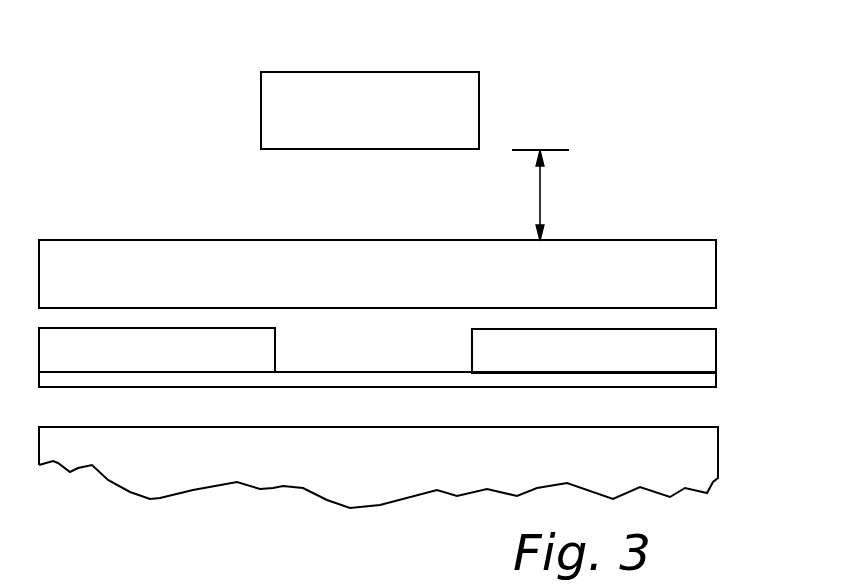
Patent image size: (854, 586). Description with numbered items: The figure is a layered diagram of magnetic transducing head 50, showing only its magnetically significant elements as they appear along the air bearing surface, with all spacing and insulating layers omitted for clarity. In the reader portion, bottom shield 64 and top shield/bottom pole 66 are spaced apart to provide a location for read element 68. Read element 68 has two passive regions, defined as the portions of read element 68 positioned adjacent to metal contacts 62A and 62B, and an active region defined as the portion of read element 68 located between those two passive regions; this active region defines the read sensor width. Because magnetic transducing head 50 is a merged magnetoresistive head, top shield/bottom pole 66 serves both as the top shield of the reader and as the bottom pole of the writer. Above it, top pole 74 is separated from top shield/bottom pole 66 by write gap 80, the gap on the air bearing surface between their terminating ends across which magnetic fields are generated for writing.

The magnetic transducing head 50 is at (698, 157).
The metal contact 62A is at (172, 364).
The metal contact 62B is at (562, 364).
The bottom shield 64 is at (352, 476).
The top shield/bottom pole 66 is at (349, 285).
The read element 68 is at (705, 382).
The top pole 74 is at (347, 116).
The write gap 80 is at (547, 195).